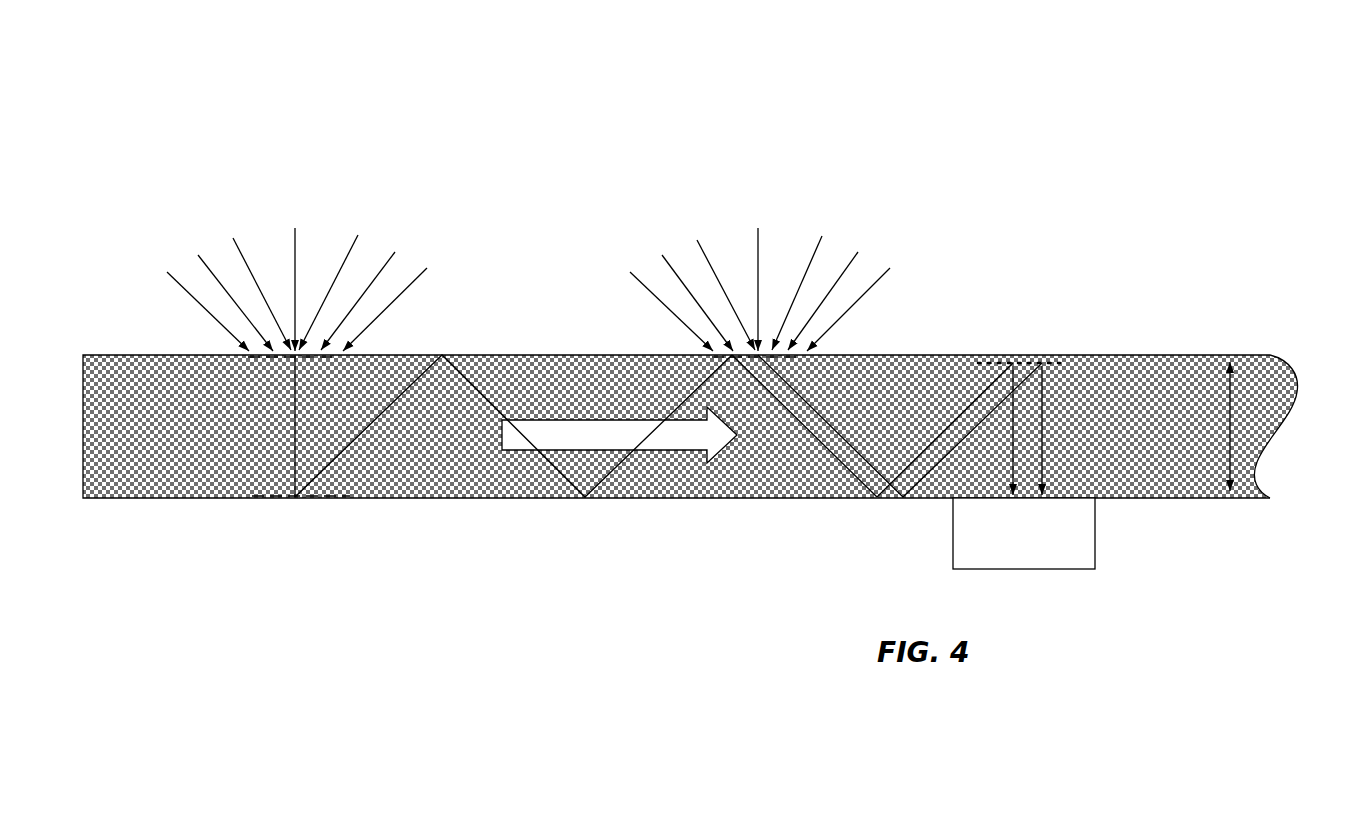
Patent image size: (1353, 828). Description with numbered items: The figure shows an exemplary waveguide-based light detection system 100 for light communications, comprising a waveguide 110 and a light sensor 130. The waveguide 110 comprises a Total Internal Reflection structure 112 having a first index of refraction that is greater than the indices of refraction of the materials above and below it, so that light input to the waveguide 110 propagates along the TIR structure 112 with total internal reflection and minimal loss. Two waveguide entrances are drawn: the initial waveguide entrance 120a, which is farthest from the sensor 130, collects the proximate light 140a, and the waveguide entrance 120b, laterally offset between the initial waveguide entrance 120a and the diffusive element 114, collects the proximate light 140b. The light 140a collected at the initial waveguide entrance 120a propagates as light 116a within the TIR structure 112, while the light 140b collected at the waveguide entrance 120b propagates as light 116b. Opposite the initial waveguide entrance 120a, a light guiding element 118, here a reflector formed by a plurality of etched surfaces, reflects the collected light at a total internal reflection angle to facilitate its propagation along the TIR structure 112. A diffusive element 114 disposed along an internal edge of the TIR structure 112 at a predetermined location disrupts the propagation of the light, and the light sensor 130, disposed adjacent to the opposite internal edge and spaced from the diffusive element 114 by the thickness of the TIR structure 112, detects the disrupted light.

The light detection system 100 is at (705, 327).
The waveguide 110 is at (775, 498).
The Total Internal Reflection structure 112 is at (1272, 383).
The diffusive element 114 is at (1000, 362).
The light 116a is at (557, 470).
The light 116b is at (1045, 447).
The light guiding element 118 is at (327, 497).
The initial waveguide entrance 120a is at (270, 357).
The waveguide entrance 120b is at (807, 355).
The light sensor 130 is at (1008, 553).
The light 140a is at (408, 206).
The light 140b is at (871, 206).